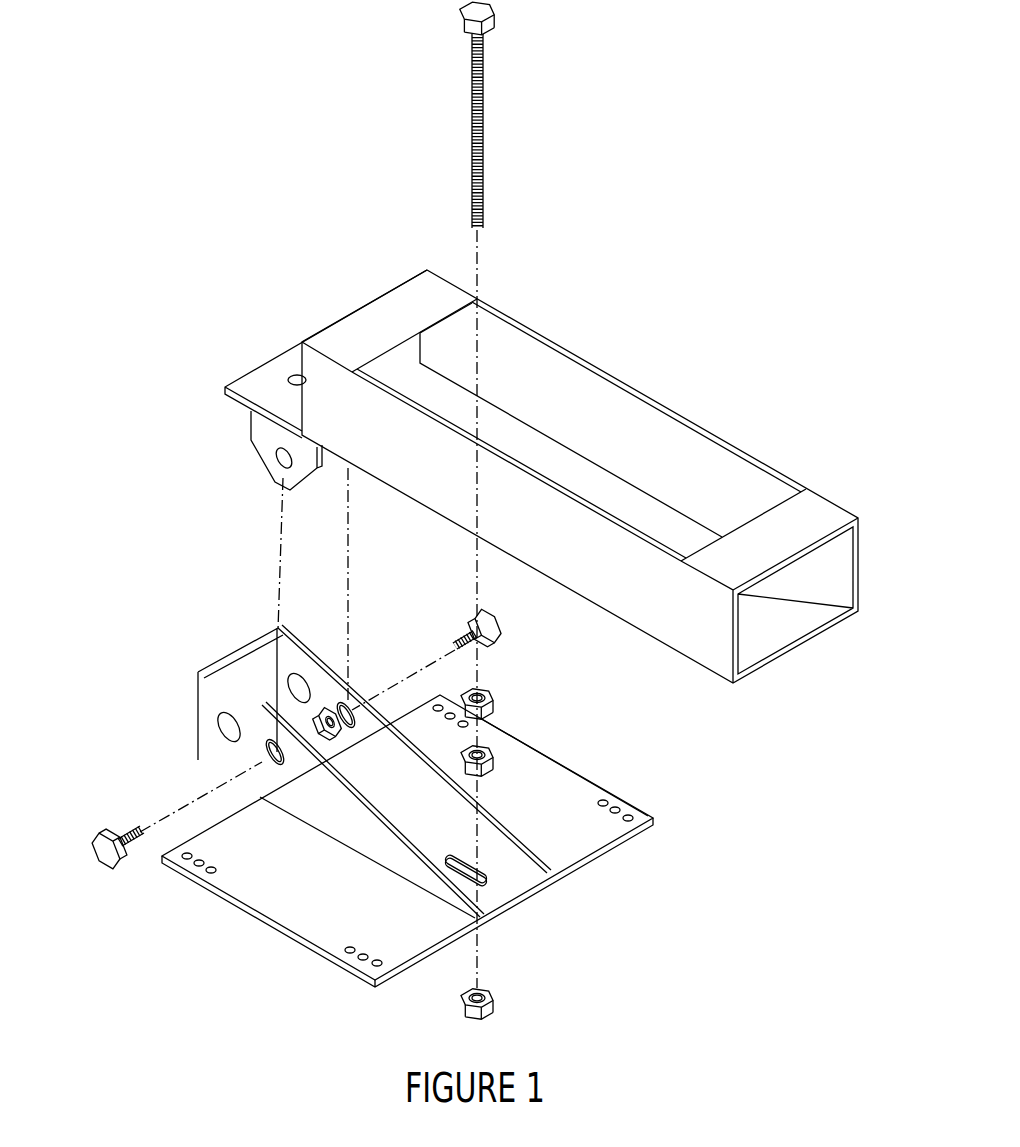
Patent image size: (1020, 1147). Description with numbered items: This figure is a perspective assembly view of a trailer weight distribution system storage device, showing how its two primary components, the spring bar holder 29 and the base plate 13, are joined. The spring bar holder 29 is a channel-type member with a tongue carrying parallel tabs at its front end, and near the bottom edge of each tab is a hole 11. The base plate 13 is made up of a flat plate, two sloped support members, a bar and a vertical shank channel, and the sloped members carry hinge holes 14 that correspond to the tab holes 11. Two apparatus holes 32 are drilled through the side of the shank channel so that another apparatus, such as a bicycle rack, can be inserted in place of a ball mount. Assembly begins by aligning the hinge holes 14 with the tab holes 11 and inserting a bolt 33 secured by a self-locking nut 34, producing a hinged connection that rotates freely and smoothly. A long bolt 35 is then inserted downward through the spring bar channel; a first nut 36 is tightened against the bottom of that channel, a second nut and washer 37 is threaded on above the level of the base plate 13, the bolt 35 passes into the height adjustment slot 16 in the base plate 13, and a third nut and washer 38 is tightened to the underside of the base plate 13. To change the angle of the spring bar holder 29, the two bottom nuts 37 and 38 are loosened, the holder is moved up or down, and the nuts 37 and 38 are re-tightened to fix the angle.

The hole 11 is at (276, 456).
The base plate 13 is at (581, 891).
The hinge holes 14 is at (352, 704).
The height adjustment slot 16 is at (490, 882).
The spring bar holder 29 is at (675, 392).
The apparatus holes 32 is at (288, 676).
The bolt 33 is at (505, 630).
The self-locking nut 34 is at (297, 722).
The long bolt 35 is at (483, 133).
The first nut 36 is at (495, 703).
The second nut and washer 37 is at (495, 760).
The third nut and washer 38 is at (495, 1003).